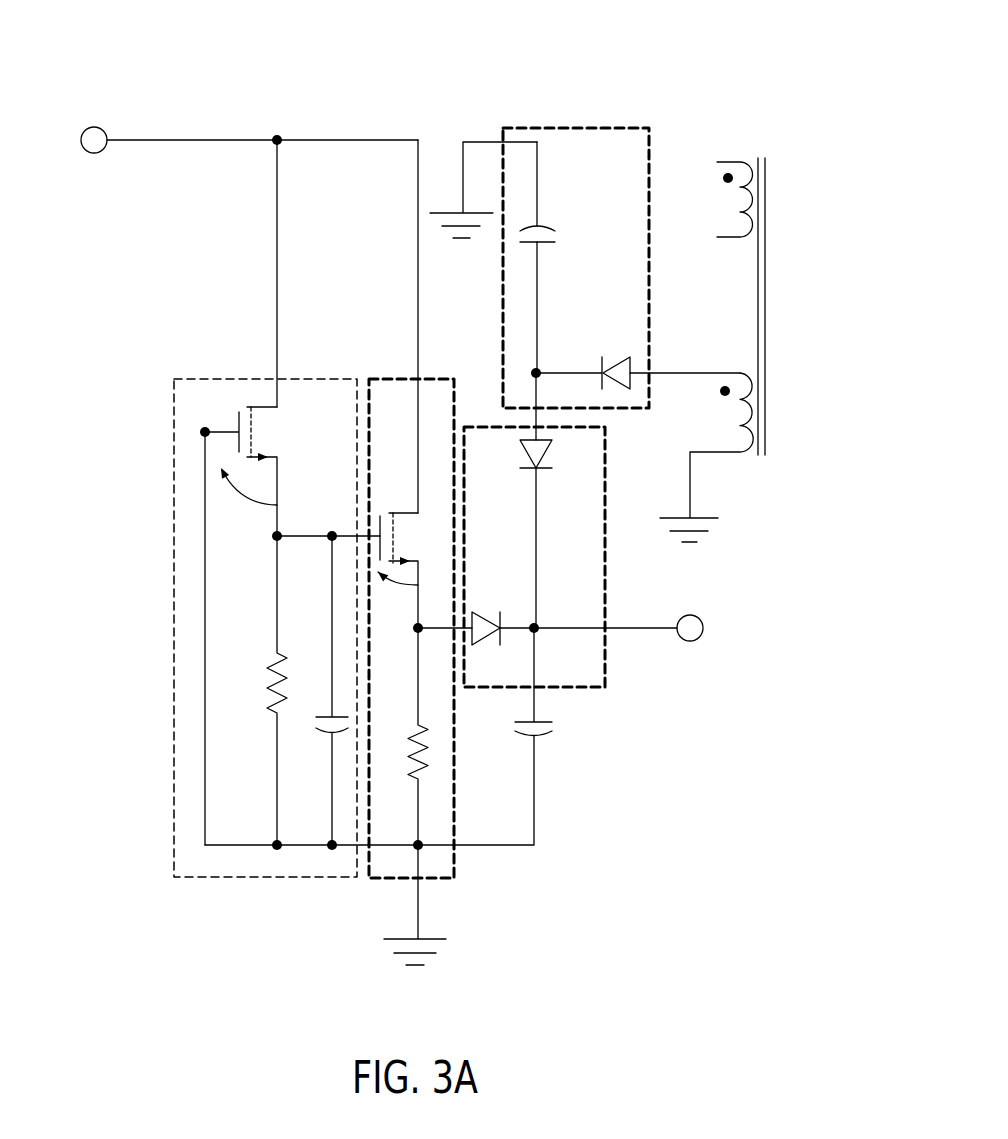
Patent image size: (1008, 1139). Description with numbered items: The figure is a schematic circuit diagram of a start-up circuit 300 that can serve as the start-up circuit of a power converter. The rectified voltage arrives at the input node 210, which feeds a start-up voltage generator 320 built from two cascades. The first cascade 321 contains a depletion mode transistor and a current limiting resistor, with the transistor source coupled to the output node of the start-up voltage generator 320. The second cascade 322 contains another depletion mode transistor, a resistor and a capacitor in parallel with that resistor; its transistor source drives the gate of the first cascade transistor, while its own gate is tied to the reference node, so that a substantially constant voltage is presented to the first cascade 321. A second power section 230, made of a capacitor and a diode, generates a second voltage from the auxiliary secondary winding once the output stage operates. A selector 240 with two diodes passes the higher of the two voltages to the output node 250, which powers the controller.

The start-up circuit 300 is at (725, 63).
The input node 210 is at (91, 153).
The second power section 230 is at (580, 125).
The selector 240 is at (610, 642).
The output node 250 is at (690, 642).
The start-up voltage generator 320 is at (345, 953).
The first cascade 321 is at (380, 877).
The second cascade 322 is at (257, 877).